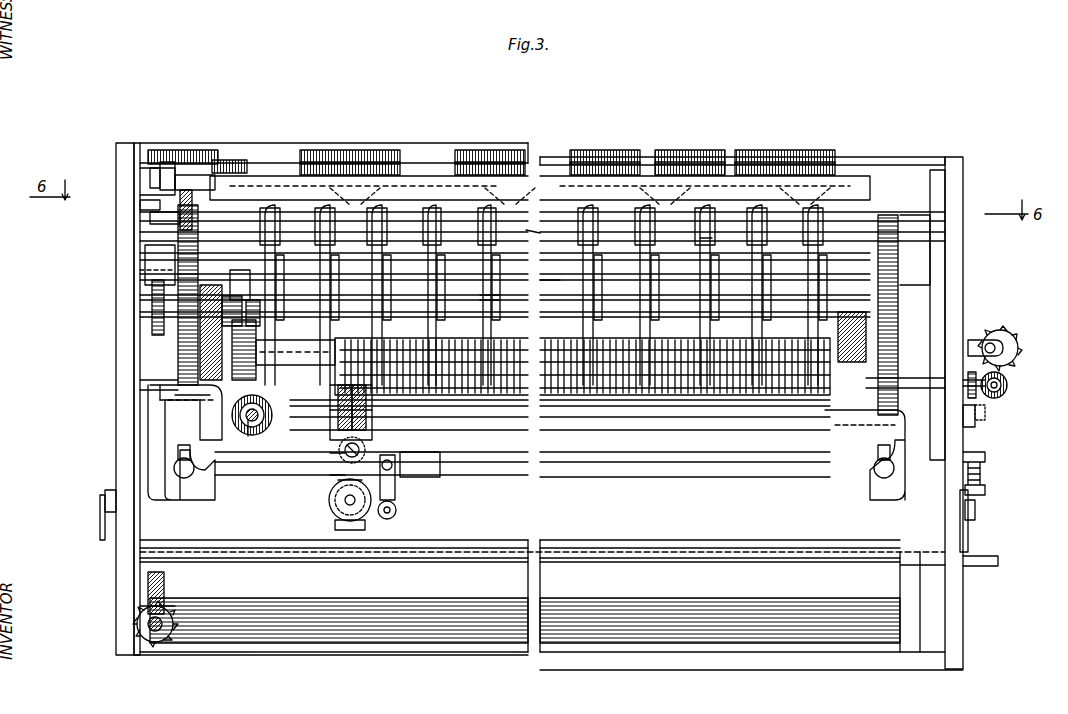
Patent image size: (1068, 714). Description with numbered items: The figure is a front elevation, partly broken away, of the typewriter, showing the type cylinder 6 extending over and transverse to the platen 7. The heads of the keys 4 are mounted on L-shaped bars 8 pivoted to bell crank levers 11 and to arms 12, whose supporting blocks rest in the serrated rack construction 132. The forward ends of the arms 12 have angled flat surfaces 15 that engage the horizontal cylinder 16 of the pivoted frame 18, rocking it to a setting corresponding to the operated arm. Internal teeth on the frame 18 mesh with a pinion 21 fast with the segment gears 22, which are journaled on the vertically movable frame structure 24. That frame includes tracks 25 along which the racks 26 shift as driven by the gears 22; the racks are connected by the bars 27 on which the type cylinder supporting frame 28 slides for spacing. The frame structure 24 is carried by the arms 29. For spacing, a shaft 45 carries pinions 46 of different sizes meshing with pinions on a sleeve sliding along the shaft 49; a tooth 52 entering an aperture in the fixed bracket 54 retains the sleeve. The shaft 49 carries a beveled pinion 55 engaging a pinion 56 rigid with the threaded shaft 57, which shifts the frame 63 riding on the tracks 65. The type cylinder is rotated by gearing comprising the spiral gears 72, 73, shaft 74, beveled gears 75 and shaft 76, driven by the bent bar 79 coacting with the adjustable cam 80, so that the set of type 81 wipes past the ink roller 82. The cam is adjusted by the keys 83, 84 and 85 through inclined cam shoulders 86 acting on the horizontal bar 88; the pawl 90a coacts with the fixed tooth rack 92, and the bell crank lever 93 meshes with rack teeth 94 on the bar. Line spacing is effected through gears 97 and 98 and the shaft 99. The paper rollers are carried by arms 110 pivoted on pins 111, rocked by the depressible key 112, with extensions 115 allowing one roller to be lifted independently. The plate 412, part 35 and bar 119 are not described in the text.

The operating keys 4 is at (332, 172).
The top plate 412 is at (418, 188).
The type cylinder 6 is at (328, 512).
The platen 7 is at (228, 575).
The L-shaped bars 8 is at (318, 258).
The bell crank levers 11 is at (696, 240).
The arms 12 is at (437, 262).
The flat surfaces 15 is at (437, 288).
The horizontal cylinder 16 is at (295, 345).
The pivoted frame 18 is at (255, 282).
The pinion 21 is at (241, 300).
The segment gears 22 is at (178, 290).
The frame structure 24 is at (200, 340).
The tracks 25 is at (190, 475).
The racks 26 is at (152, 432).
The bars 27 is at (700, 478).
The type cylinder supporting frame 28 is at (440, 455).
The arms 29 is at (205, 290).
The bar 35 is at (548, 280).
The shaft 45 is at (1008, 350).
The pinions 46 is at (1010, 334).
The shaft 49 is at (1008, 388).
The tooth 52 is at (986, 412).
The fixed bracket 54 is at (970, 427).
The beveled pinion 55 is at (1008, 380).
The pinion 56 is at (990, 398).
The threaded shaft 57 is at (540, 352).
The frame 63 is at (362, 398).
The tracks 65 is at (688, 408).
The spiral gear 72 is at (392, 450).
The spiral gear 73 is at (335, 432).
The shaft 74 is at (610, 430).
The beveled gears 75 is at (272, 416).
The shaft 76 is at (252, 436).
The bent bar 79 is at (244, 350).
The adjustable cam 80 is at (189, 400).
The set of type 81 is at (396, 518).
The ink roller 82 is at (400, 512).
The key 83 is at (158, 168).
The key 84 is at (170, 165).
The key 85 is at (205, 175).
The inclined cam shoulder 86 is at (150, 220).
The horizontal bar 88 is at (145, 252).
The pawl 90a is at (140, 175).
The fixed tooth rack 92 is at (140, 205).
The bell crank lever 93 is at (152, 318).
The rack teeth 94 is at (140, 270).
The gear 97 is at (148, 585).
The gear 98 is at (140, 625).
The shaft 99 is at (145, 640).
The arms 110 is at (968, 536).
The pins 111 is at (975, 514).
The depressible key 112 is at (985, 454).
The extensions 115 is at (985, 560).
The bar 119 is at (764, 555).
The rack construction 132 is at (538, 229).